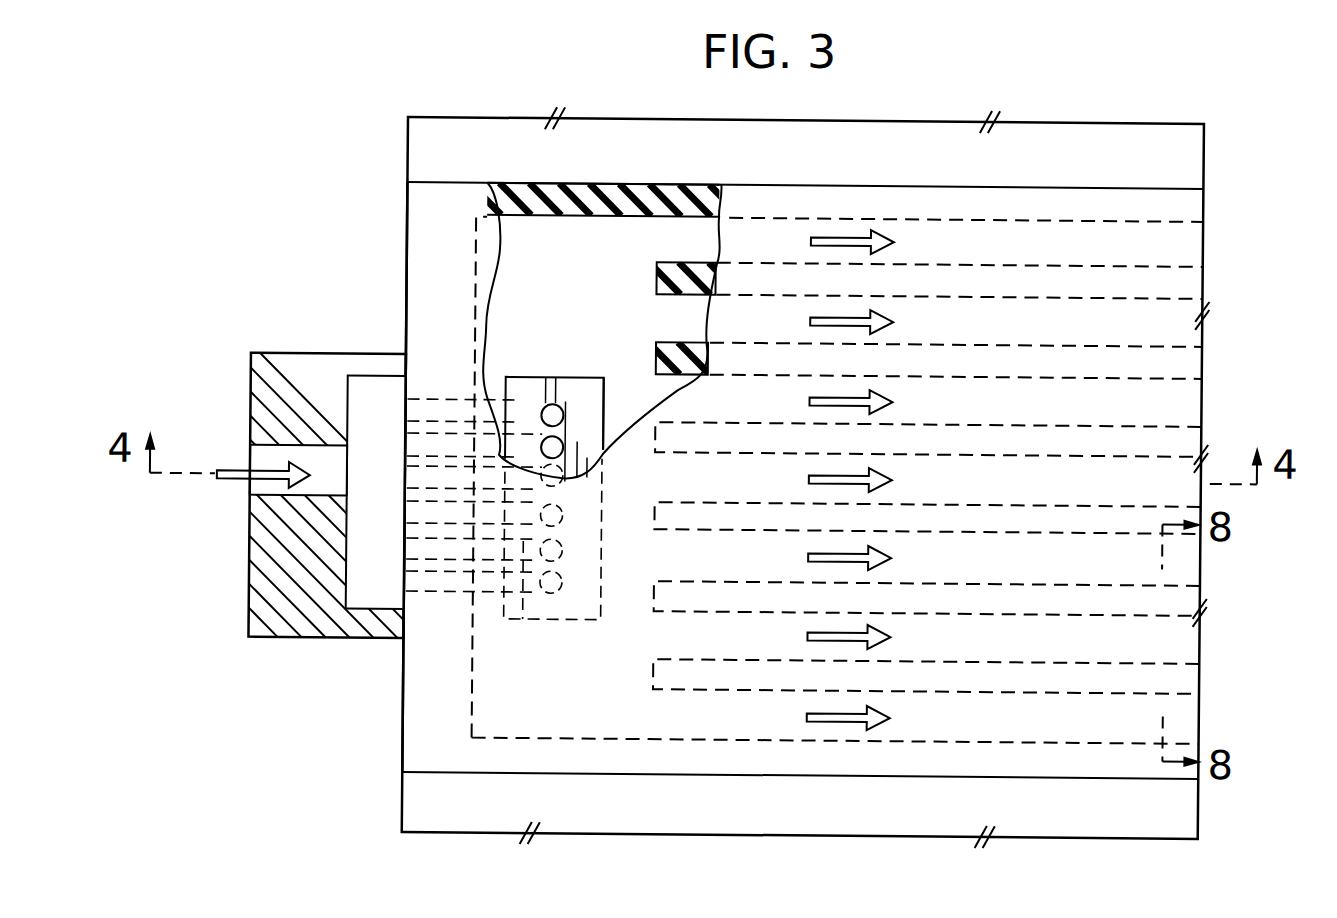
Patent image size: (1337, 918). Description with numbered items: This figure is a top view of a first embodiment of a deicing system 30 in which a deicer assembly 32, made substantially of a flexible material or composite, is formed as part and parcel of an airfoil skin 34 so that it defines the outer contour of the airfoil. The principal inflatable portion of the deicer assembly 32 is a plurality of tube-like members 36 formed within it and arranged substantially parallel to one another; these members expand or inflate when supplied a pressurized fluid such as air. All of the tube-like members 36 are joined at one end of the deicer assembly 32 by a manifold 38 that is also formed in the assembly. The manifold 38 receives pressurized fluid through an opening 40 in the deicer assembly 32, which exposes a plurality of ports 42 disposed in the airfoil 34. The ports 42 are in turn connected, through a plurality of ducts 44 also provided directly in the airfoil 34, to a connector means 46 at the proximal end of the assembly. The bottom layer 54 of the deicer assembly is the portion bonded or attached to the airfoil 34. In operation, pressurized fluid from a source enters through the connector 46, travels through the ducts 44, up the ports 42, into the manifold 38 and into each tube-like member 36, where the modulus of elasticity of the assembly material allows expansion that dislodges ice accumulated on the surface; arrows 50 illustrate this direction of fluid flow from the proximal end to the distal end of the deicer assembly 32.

The deicing system 30 is at (1230, 195).
The deicer assembly 32 is at (400, 249).
The airfoil skin 34 is at (930, 130).
The tube-like members 36 is at (710, 243).
The manifold 38 is at (553, 274).
The opening 40 is at (607, 432).
The ports 42 is at (572, 472).
The ducts 44 is at (523, 376).
The connector means 46 is at (305, 638).
The arrows 50 is at (851, 234).
The bottom layer 54 is at (1186, 245).